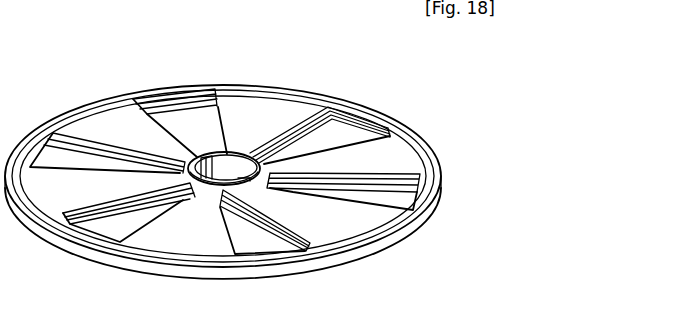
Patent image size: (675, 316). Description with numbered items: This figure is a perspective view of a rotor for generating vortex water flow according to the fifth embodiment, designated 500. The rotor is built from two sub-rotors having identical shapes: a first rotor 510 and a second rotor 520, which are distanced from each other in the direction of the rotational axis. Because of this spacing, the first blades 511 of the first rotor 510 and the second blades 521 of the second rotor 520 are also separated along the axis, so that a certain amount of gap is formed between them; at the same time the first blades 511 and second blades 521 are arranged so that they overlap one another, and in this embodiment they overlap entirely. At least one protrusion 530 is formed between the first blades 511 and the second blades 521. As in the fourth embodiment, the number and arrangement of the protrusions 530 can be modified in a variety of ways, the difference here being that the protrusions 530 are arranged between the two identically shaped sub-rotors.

The impeller disc 500 is at (232, 51).
The first rotor 510 is at (442, 172).
The first blades 511 is at (275, 227).
The second rotor 520 is at (397, 143).
The second blades 521 is at (278, 98).
The protrusion 530 is at (293, 178).